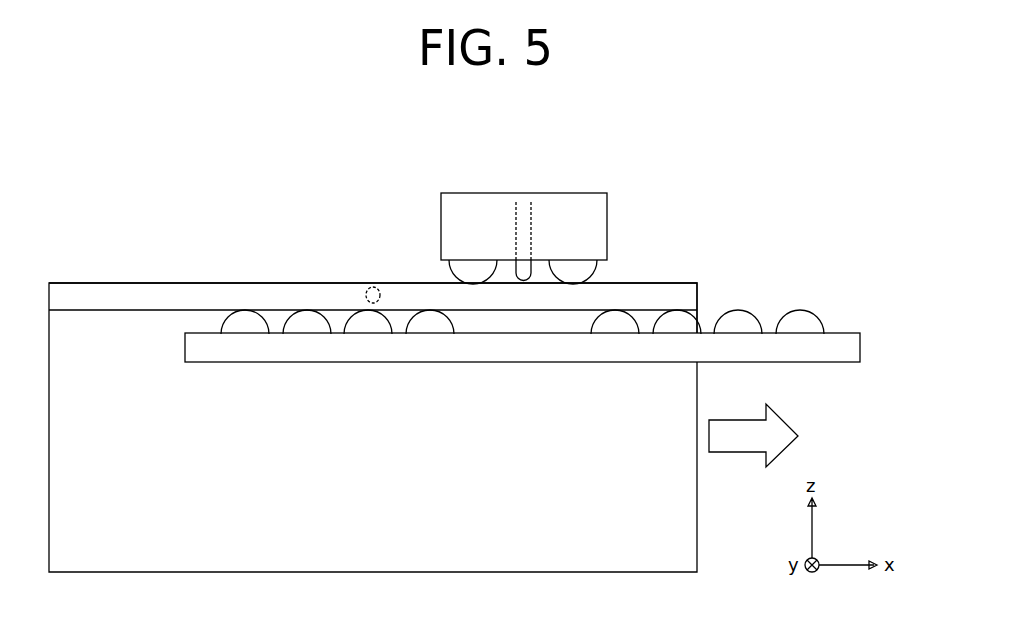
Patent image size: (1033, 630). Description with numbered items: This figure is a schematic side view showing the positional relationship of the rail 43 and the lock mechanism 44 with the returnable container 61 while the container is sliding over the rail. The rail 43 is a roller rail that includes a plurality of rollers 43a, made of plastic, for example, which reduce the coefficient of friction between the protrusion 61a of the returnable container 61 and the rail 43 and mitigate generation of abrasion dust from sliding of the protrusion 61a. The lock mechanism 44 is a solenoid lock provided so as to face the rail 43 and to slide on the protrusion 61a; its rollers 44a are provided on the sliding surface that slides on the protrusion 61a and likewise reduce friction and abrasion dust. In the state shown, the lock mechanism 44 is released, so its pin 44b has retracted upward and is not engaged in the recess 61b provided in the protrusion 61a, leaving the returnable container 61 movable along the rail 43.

The returnable container 61 is at (697, 519).
The protrusion 61a is at (699, 295).
The recess 61b is at (371, 288).
The rail 43 is at (849, 349).
The rollers 43a is at (823, 322).
The lock mechanism 44 is at (607, 228).
The rollers 44a is at (597, 274).
The pin 44b is at (526, 200).